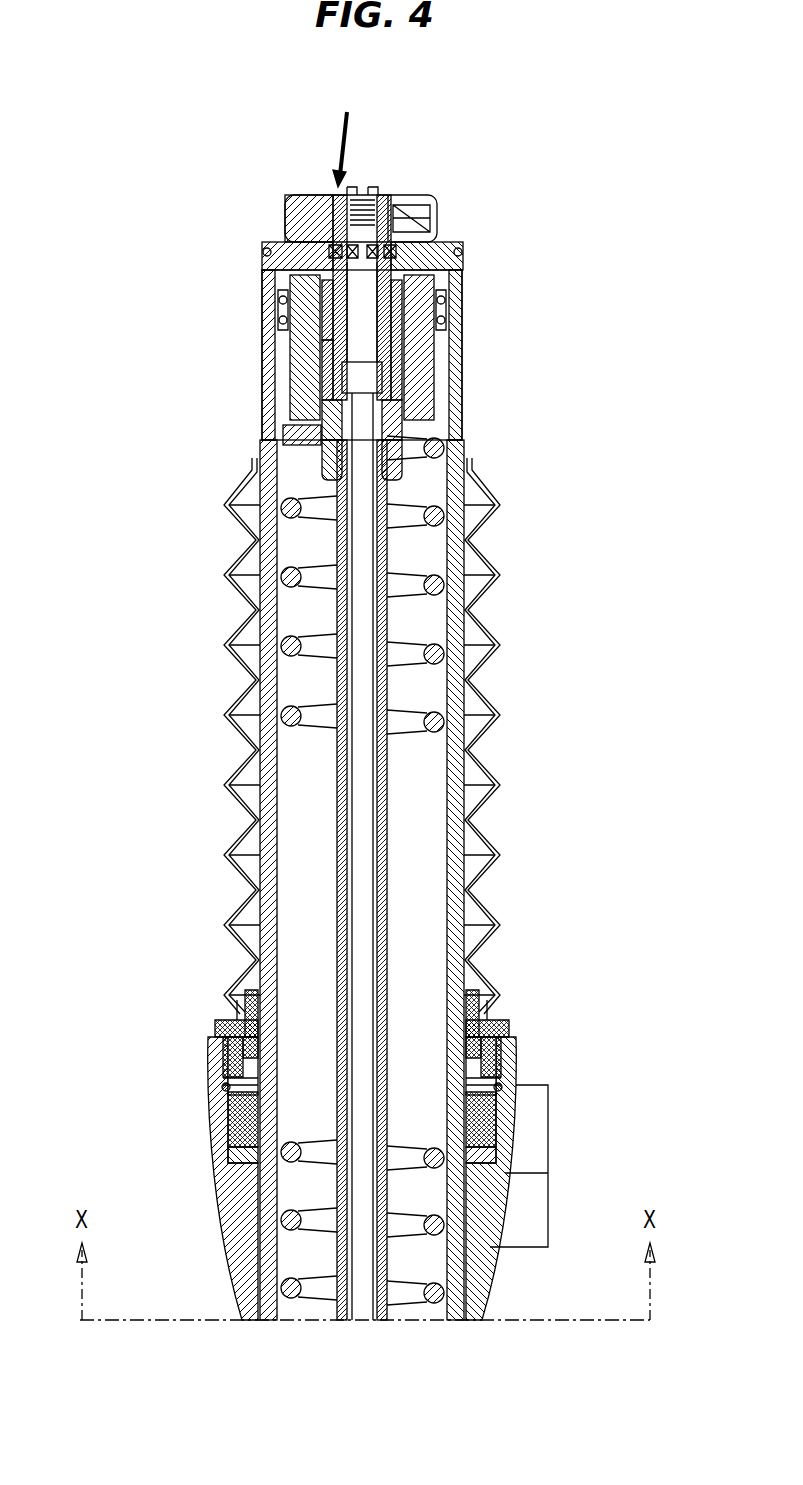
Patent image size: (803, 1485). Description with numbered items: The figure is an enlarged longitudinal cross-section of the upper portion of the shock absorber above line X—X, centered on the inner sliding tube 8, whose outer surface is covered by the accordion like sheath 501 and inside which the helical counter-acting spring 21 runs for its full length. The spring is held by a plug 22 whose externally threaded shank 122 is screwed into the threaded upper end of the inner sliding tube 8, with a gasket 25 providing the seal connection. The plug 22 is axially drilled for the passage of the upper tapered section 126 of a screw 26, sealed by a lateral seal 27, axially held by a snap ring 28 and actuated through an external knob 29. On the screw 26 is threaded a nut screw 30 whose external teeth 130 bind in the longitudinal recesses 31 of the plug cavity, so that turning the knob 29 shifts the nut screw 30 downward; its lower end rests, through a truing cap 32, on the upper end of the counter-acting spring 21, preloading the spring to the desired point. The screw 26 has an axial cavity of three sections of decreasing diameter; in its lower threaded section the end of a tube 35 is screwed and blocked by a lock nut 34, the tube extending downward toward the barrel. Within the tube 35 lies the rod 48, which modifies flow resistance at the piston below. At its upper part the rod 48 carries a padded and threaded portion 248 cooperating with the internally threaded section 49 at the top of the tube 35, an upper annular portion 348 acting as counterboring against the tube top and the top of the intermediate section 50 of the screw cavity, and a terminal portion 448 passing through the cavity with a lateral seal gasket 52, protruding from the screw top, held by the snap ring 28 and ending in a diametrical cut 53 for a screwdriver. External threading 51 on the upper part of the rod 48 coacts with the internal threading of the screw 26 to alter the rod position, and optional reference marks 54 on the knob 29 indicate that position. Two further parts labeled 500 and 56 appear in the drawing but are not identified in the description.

The inner sliding tube 8 is at (457, 680).
The counter-acting spring 21 is at (434, 722).
The plug 22 is at (464, 270).
The gasket 25 is at (452, 292).
The screw 26 is at (372, 318).
The lateral seal 27 is at (332, 260).
The snap ring 28 is at (327, 256).
The external knob 29 is at (398, 212).
The nut screw 30 is at (400, 392).
The longitudinal recesses 31 is at (438, 433).
The truing cap 32 is at (292, 431).
The lock nut 34 is at (400, 478).
The tube 35 is at (390, 608).
The rod 48 is at (370, 770).
The internally threaded section 49 is at (320, 345).
The intermediate section 50 is at (330, 383).
The external threading 51 is at (392, 196).
The lateral seal gasket 52 is at (300, 288).
The diametrical cut 53 is at (358, 196).
The reference marks 54 is at (344, 136).
The O-ring 56 is at (264, 251).
The externally threaded shank 122 is at (325, 362).
The upper tapered section 126 is at (460, 251).
The teeth 130 is at (416, 266).
The padded and threaded portion 248 is at (372, 380).
The upper annular portion 348 is at (400, 322).
The terminal portion 448 is at (396, 238).
The cap housing 500 is at (435, 208).
The accordion like sheath 501 is at (498, 838).